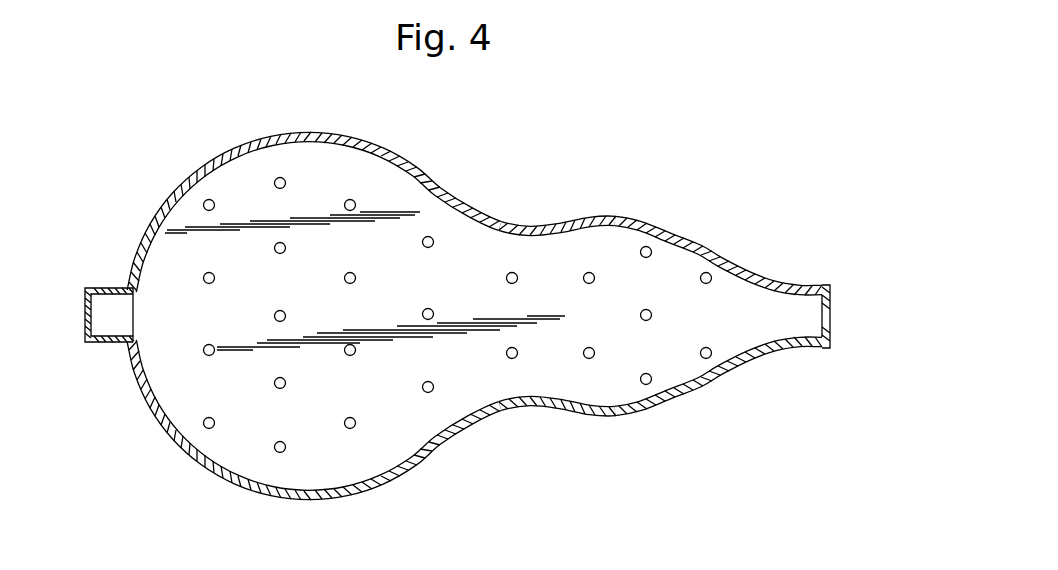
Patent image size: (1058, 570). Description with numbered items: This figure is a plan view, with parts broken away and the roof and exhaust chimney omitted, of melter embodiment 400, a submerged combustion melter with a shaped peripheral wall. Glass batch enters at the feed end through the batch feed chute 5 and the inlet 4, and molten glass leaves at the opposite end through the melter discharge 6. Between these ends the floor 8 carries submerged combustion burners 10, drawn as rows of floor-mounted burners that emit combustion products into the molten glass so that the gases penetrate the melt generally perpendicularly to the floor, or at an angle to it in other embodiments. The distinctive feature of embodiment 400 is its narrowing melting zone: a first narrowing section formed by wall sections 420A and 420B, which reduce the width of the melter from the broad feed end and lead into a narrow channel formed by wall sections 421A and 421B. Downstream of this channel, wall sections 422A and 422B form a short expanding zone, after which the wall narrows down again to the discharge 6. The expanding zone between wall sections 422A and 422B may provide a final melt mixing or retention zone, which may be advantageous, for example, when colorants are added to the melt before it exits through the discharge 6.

The melter embodiment 400 is at (693, 90).
The wall section 420A is at (412, 163).
The wall section 420B is at (453, 438).
The wall section 421A is at (530, 225).
The wall section 421B is at (532, 408).
The wall section 422A is at (665, 218).
The wall section 422B is at (670, 407).
The inlet 4 is at (128, 317).
The batch feed chute 5 is at (110, 286).
The melter discharge 6 is at (833, 313).
The floor 8 is at (681, 350).
The submerged combustion burners 10 is at (278, 390).